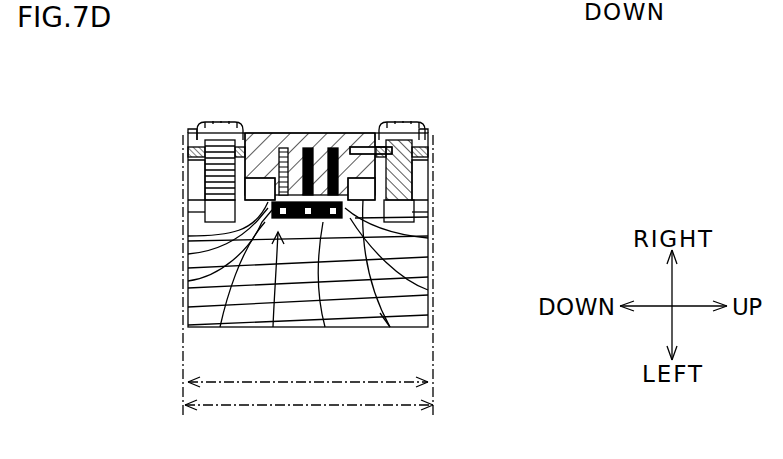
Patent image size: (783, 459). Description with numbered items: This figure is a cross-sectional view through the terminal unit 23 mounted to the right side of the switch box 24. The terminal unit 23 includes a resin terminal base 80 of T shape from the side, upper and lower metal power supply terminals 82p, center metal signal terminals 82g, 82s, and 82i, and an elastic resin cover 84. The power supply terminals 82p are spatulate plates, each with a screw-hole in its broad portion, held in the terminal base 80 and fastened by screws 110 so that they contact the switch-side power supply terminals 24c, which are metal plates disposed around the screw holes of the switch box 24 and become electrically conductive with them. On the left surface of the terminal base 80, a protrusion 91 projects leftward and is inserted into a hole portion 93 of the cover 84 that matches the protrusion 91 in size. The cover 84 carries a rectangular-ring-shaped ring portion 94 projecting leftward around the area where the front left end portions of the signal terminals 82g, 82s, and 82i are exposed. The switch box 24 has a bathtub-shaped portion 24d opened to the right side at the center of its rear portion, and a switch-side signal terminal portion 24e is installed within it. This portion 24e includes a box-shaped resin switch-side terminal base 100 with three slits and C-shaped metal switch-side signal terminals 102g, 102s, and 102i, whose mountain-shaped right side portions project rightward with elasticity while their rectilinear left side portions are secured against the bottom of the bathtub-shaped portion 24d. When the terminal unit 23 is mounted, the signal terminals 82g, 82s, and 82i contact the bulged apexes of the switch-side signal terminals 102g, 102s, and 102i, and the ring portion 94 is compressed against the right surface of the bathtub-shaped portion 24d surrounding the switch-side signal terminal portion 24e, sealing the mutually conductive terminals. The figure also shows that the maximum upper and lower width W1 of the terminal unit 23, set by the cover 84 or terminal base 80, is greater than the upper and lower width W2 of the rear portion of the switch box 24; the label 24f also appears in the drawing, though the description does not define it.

The terminal unit 23 is at (455, 105).
The switch box 24 is at (428, 262).
The switch-side power supply terminal 24c is at (188, 165).
The bathtub-shaped portion 24d is at (395, 335).
The switch-side signal terminal portion 24e is at (220, 327).
The upper portion of nozzle body 24f is at (498, 7).
The terminal base 80 is at (183, 135).
The signal terminal 82g is at (336, 148).
The signal terminal 82i is at (280, 148).
The power supply terminal 82p is at (188, 150).
The signal terminal 82s is at (305, 148).
The cover 84 is at (188, 236).
The protrusion 91 is at (428, 290).
The hole portion 93 is at (188, 255).
The ring portion 94 is at (428, 238).
The switch-side terminal base 100 is at (297, 282).
The switch-side signal terminal 102g is at (427, 312).
The switch-side signal terminal 102i is at (188, 284).
The switch-side signal terminal 102s is at (326, 327).
The screw 110 is at (198, 123).
The maximum width W1 is at (233, 405).
The upper and lower width W2 is at (387, 382).